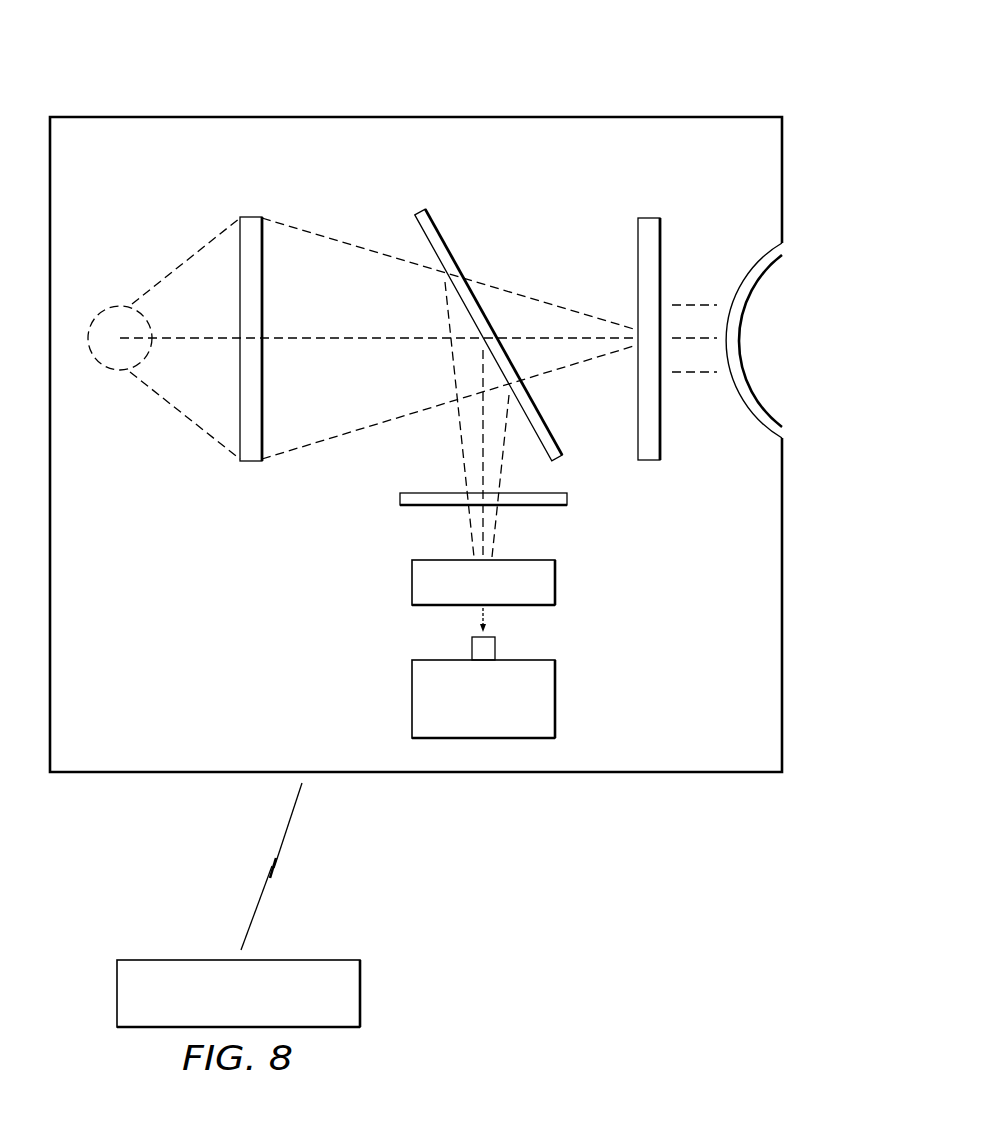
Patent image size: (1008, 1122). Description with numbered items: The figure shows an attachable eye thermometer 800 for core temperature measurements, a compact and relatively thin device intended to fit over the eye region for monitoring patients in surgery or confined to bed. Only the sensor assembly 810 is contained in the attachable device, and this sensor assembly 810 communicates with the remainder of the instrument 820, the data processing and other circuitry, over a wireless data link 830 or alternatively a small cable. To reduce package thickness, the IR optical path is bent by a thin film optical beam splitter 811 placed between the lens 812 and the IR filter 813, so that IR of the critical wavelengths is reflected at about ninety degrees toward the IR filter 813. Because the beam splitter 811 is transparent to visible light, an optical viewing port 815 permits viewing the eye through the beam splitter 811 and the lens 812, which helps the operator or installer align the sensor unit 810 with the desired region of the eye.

The attachable eye thermometer 800 is at (264, 57).
The sensor assembly 810 is at (245, 653).
The thin film optical beam splitter 811 is at (480, 247).
The lens 812 is at (252, 217).
The IR filter 813 is at (555, 582).
The optical viewing port 815 is at (739, 340).
The remainder of the instrument 820 is at (116, 994).
The wireless data link 830 is at (265, 888).